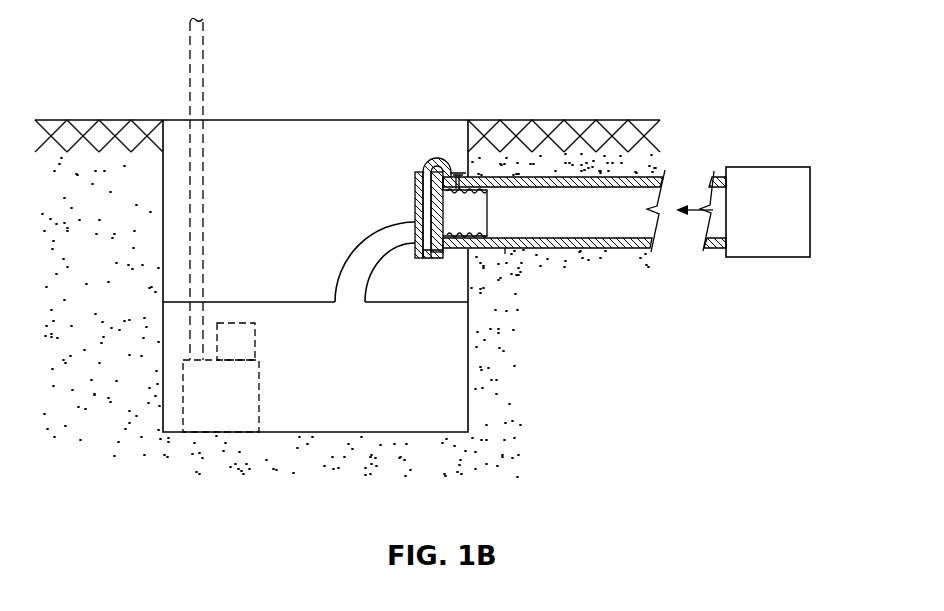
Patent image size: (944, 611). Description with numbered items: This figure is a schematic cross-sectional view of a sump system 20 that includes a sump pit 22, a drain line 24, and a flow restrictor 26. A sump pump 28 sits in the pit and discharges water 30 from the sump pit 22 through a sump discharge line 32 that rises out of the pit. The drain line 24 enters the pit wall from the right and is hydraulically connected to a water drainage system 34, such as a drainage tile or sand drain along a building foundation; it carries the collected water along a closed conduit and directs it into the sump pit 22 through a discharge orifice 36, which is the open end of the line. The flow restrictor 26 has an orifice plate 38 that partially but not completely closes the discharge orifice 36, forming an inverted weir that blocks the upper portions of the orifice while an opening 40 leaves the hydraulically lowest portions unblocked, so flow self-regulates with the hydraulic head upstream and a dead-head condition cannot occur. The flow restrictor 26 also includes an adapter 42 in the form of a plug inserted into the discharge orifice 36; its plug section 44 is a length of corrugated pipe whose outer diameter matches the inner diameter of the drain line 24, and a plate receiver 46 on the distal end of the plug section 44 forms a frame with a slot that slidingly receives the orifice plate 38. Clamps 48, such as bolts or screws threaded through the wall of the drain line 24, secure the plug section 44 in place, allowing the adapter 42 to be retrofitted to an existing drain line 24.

The sump system 20 is at (418, 84).
The sump pit 22 is at (358, 433).
The drain line 24 is at (634, 249).
The flow restrictor 26 is at (386, 156).
The sump pump 28 is at (183, 393).
The water 30 is at (344, 402).
The sump discharge line 32 is at (190, 37).
The water drainage system 34 is at (778, 258).
The discharge orifice 36 is at (475, 224).
The orifice plate 38 is at (423, 204).
The opening 40 is at (418, 232).
The adapter 42 is at (432, 265).
The plug section 44 is at (478, 177).
The plate receiver 46 is at (415, 178).
The clamps 48 is at (457, 172).